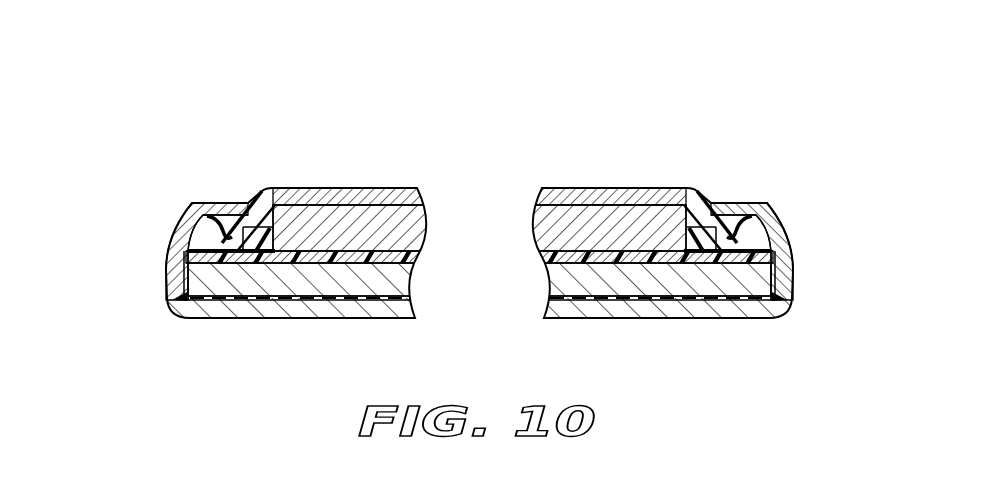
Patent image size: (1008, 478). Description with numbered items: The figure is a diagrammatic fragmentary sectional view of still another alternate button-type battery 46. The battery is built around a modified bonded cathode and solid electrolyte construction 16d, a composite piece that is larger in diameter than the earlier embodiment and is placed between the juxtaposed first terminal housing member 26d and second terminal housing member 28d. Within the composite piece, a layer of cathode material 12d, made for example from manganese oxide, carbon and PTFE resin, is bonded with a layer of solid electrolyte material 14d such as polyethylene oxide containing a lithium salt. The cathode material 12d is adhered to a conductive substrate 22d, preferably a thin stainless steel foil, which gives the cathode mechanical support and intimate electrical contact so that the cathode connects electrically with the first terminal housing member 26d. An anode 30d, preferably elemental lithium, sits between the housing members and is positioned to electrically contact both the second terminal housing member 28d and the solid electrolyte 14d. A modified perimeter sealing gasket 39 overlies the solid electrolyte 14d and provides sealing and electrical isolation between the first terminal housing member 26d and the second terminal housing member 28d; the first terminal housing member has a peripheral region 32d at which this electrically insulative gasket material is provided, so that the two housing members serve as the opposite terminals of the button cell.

The button-type battery 46 is at (598, 90).
The second terminal housing member 28d is at (303, 170).
The perimeter sealing gasket 39 is at (224, 222).
The anode 30d is at (530, 229).
The solid electrolyte material 14d is at (535, 259).
The cathode material 12d is at (550, 290).
The conductive substrate 22d is at (542, 310).
The first terminal housing member 26d is at (250, 310).
The bonded cathode and solid electrolyte construction 16d is at (172, 301).
The peripheral region 32d is at (157, 349).